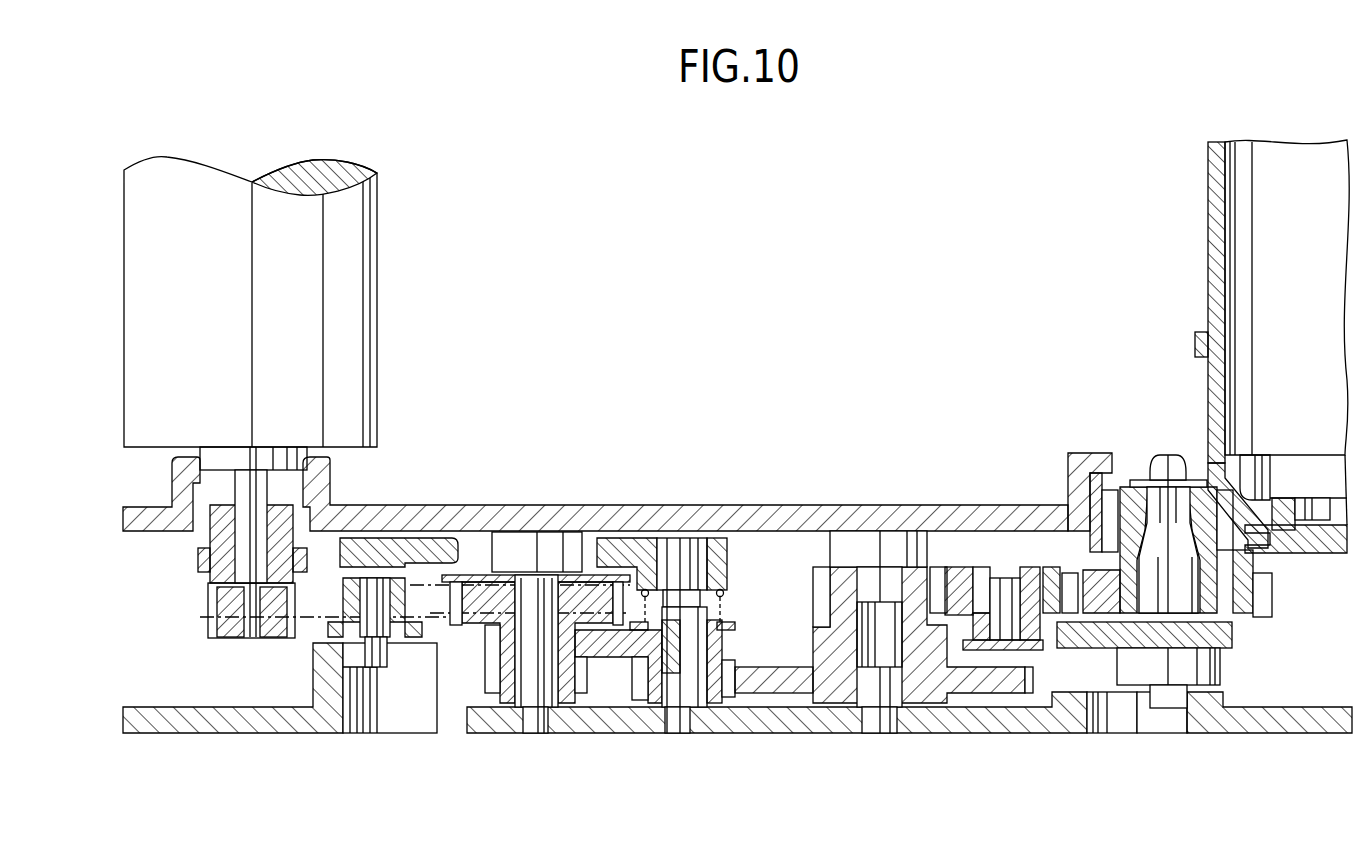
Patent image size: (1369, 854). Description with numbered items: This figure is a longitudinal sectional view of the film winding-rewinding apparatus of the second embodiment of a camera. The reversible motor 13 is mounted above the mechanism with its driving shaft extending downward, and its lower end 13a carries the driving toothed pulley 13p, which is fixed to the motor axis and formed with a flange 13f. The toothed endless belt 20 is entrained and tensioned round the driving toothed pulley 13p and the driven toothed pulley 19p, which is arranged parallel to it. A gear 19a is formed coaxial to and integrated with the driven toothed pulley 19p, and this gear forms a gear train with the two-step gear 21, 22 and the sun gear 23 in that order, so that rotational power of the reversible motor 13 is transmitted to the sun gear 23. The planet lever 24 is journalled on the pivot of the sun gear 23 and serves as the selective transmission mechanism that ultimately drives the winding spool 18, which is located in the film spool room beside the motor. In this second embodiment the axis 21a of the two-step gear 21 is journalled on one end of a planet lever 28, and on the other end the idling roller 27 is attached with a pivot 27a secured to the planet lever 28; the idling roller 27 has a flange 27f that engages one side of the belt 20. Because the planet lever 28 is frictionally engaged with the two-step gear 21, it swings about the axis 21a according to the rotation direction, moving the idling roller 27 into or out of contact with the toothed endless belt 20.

The reversible motor 13 is at (380, 297).
The shaft end block 13a is at (243, 515).
The flange 13f is at (200, 557).
The driving toothed pulley 13p is at (230, 622).
The toothed endless belt 20 is at (305, 615).
The idling roller 27 is at (357, 580).
The flange 27f is at (328, 630).
The pivot 27a is at (370, 640).
The planet lever 28 is at (436, 550).
The driven toothed pulley 19p is at (480, 612).
The gear 19a is at (492, 692).
The two-step gear 21 is at (610, 650).
The axis 21a is at (673, 550).
The two-step gear 22 is at (798, 683).
The sun gear 23 is at (960, 572).
The planet lever 24 is at (1070, 650).
The winding spool 18 is at (1210, 265).